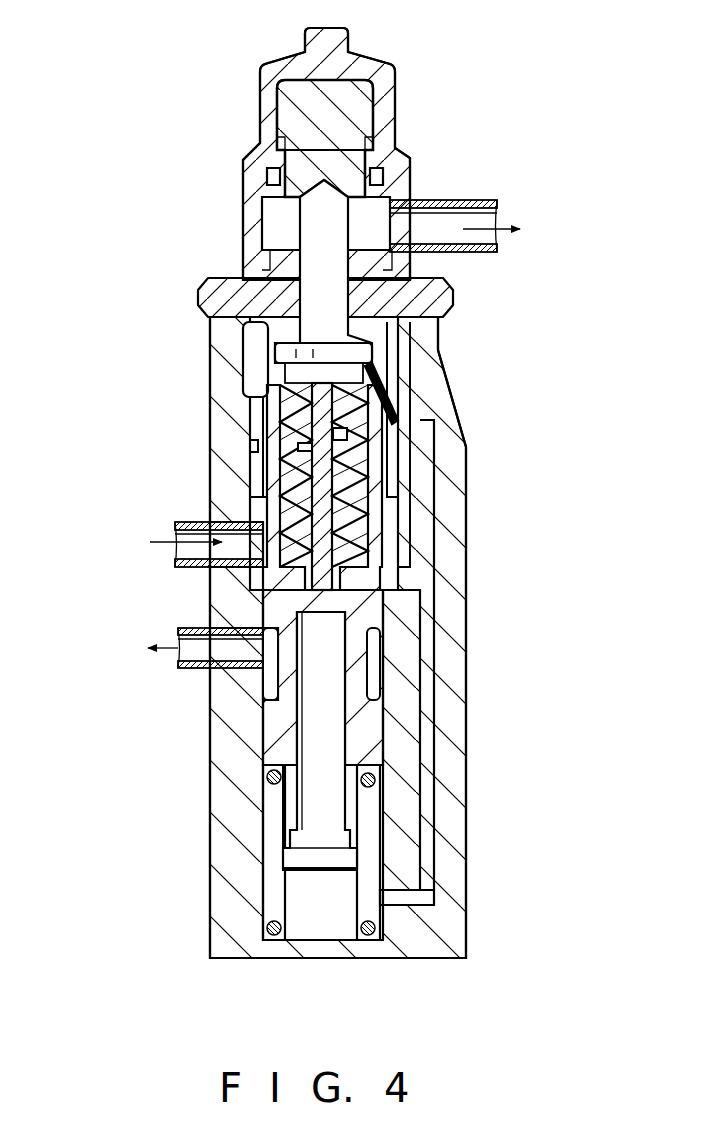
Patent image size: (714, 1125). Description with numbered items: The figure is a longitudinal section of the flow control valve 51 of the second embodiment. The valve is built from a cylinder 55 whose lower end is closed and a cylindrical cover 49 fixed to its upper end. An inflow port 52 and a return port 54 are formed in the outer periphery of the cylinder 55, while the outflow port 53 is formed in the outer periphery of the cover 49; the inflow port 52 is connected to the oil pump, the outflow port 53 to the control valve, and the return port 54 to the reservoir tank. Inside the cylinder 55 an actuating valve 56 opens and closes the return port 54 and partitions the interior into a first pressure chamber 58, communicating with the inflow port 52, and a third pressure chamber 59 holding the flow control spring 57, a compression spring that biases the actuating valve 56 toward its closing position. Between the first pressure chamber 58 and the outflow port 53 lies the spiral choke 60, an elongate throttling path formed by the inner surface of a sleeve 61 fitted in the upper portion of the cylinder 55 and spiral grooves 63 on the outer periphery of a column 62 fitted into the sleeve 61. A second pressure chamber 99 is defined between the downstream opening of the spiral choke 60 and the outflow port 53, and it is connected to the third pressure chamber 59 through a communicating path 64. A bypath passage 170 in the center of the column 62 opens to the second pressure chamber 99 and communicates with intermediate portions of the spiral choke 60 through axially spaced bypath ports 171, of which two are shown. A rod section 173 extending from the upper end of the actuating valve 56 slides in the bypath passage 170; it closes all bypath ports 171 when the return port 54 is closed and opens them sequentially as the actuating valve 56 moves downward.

The cylindrical cover 49 is at (256, 147).
The flow control valve 51 is at (434, 479).
The inflow port 52 is at (215, 562).
The outflow port 53 is at (405, 225).
The return port 54 is at (215, 665).
The cylinder 55 is at (216, 732).
The actuating valve 56 is at (275, 745).
The flow control spring 57 is at (263, 930).
The first pressure chamber 58 is at (370, 574).
The third pressure chamber 59 is at (325, 915).
The spiral choke 60 is at (308, 440).
The sleeve 61 is at (253, 348).
The column 62 is at (288, 492).
The spiral grooves 63 is at (340, 435).
The communicating path 64 is at (433, 488).
The second pressure chamber 99 is at (362, 352).
The bypath passage 170 is at (300, 378).
The bypath ports 171 is at (380, 437).
The rod section 173 is at (340, 523).